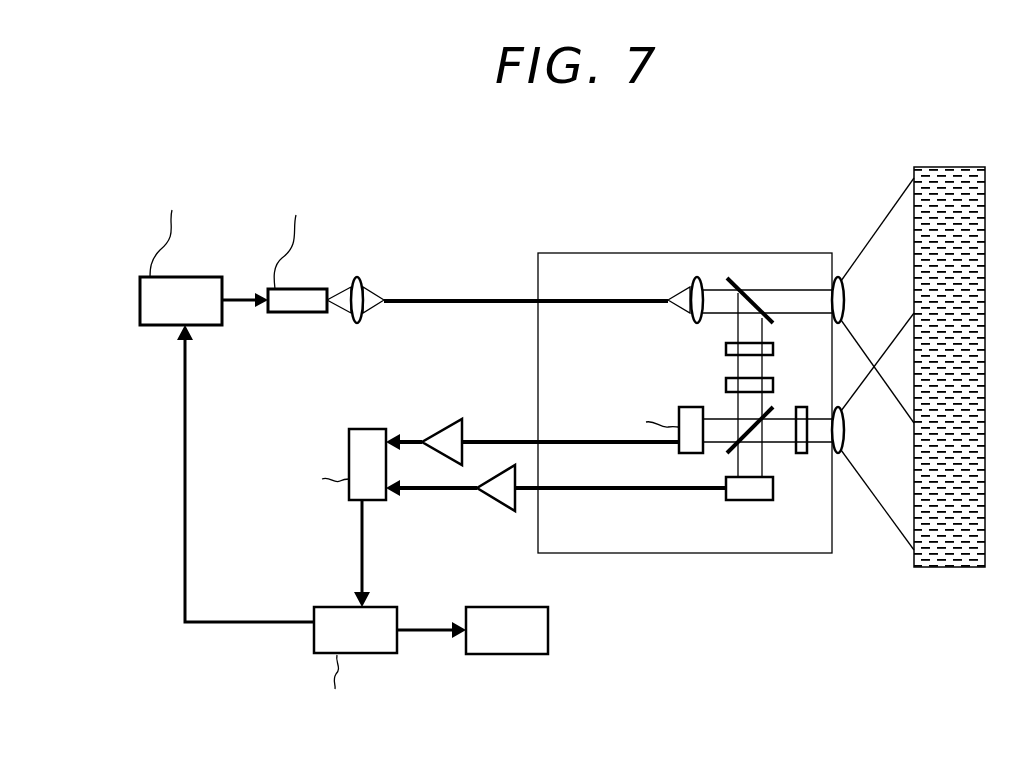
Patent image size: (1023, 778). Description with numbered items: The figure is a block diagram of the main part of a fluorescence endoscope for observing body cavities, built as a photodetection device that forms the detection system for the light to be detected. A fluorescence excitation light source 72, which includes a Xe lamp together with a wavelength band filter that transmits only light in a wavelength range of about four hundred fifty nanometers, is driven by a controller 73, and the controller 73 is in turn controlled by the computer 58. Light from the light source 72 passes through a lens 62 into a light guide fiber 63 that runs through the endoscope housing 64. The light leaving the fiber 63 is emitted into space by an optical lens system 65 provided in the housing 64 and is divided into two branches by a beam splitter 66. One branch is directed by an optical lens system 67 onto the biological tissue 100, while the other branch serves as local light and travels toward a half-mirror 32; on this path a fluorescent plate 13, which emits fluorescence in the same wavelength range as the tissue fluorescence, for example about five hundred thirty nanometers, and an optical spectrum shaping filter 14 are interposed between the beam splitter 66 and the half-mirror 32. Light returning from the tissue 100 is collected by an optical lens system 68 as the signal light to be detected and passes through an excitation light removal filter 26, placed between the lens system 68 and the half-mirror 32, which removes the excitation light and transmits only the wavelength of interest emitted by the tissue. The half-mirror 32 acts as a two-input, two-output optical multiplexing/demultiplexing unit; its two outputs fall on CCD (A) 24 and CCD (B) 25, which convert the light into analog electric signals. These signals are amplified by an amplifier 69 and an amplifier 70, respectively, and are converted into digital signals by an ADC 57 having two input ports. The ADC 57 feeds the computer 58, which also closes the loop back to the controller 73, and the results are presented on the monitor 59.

The fluorescent plate 13 is at (726, 350).
The optical spectrum shaping filter 14 is at (726, 385).
The CCD (A) 24 is at (679, 412).
The CCD (B) 25 is at (748, 502).
The excitation light removal filter 26 is at (800, 455).
The half-mirror 32 is at (772, 408).
The ADC 57 is at (363, 435).
The computer 58 is at (384, 612).
The monitor 59 is at (478, 612).
The lens 62 is at (365, 283).
The light guide fiber 63 is at (432, 296).
The endoscope housing 64 is at (575, 260).
The optical lens system 65 is at (700, 280).
The beam splitter 66 is at (745, 281).
The optical lens system 67 is at (845, 303).
The optical lens system 68 is at (845, 433).
The amplifier 69 is at (462, 414).
The amplifier 70 is at (515, 485).
The fluorescence excitation light source 72 is at (280, 297).
The controller 73 is at (163, 283).
The biological tissue 100 is at (925, 167).